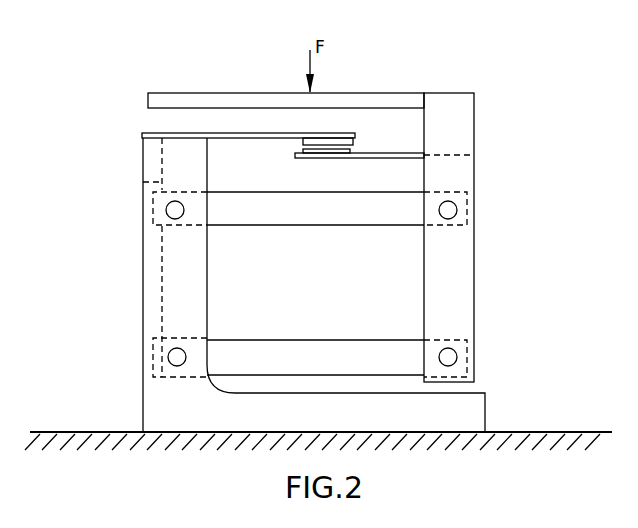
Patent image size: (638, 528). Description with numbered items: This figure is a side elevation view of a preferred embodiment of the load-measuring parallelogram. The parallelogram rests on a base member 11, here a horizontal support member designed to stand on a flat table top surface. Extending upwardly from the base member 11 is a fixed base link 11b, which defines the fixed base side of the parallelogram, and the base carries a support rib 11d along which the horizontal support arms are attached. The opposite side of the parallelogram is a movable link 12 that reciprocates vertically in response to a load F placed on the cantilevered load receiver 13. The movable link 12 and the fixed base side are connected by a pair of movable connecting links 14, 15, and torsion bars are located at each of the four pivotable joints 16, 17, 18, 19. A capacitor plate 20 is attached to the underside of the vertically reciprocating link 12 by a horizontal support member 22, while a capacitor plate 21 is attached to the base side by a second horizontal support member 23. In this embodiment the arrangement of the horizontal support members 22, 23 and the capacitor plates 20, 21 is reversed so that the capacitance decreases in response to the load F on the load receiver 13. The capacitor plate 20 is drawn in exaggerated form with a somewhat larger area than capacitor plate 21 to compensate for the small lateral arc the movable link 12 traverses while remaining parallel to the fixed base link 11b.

The base member 11 is at (378, 423).
The fixed base link 11b is at (150, 272).
The support rib 11d is at (150, 160).
The movable link 12 is at (471, 284).
The load receiver 13 is at (203, 93).
The connecting link 14 is at (272, 226).
The connecting link 15 is at (345, 340).
The pivotable joint 16 is at (166, 212).
The pivotable joint 17 is at (457, 210).
The pivotable joint 18 is at (457, 360).
The pivotable joint 19 is at (168, 357).
The capacitor plate 20 is at (303, 150).
The capacitor plate 21 is at (353, 141).
The horizontal support member 22 is at (392, 158).
The horizontal support member 23 is at (240, 133).